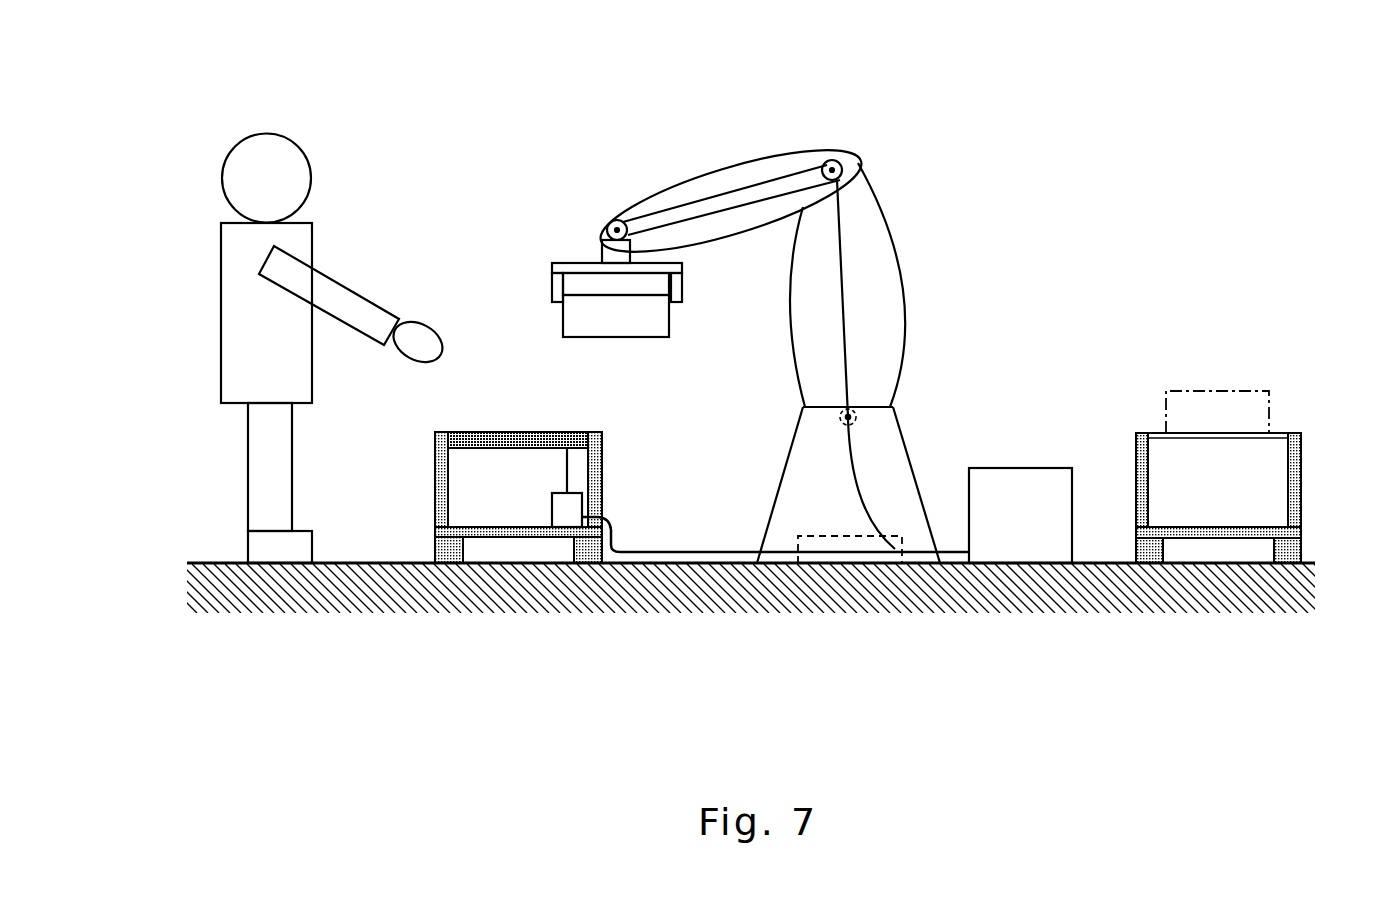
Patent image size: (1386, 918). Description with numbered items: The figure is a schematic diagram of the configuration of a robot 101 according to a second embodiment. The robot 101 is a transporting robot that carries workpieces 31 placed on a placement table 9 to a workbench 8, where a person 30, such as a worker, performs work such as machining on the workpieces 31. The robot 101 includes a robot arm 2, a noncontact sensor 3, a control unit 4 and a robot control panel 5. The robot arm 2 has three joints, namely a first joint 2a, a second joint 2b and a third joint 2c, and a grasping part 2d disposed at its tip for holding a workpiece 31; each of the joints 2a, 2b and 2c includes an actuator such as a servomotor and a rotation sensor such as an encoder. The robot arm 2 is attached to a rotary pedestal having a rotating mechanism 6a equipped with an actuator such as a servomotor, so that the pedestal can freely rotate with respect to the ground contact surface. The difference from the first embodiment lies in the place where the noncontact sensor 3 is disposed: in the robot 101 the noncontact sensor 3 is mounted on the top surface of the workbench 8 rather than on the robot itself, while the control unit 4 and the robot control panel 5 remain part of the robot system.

The robot 101 is at (895, 142).
The robot arm 2 is at (742, 147).
The first joint 2a is at (617, 219).
The second joint 2b is at (832, 159).
The third joint 2c is at (858, 417).
The grasping part 2d is at (682, 268).
The noncontact sensor 3 is at (581, 443).
The control unit 4 is at (578, 506).
The robot control panel 5 is at (997, 468).
The rotating mechanism 6a is at (888, 540).
The workbench 8 is at (435, 436).
The placement table 9 is at (1136, 437).
The person 30 is at (266, 133).
The workpiece 31 is at (577, 330).